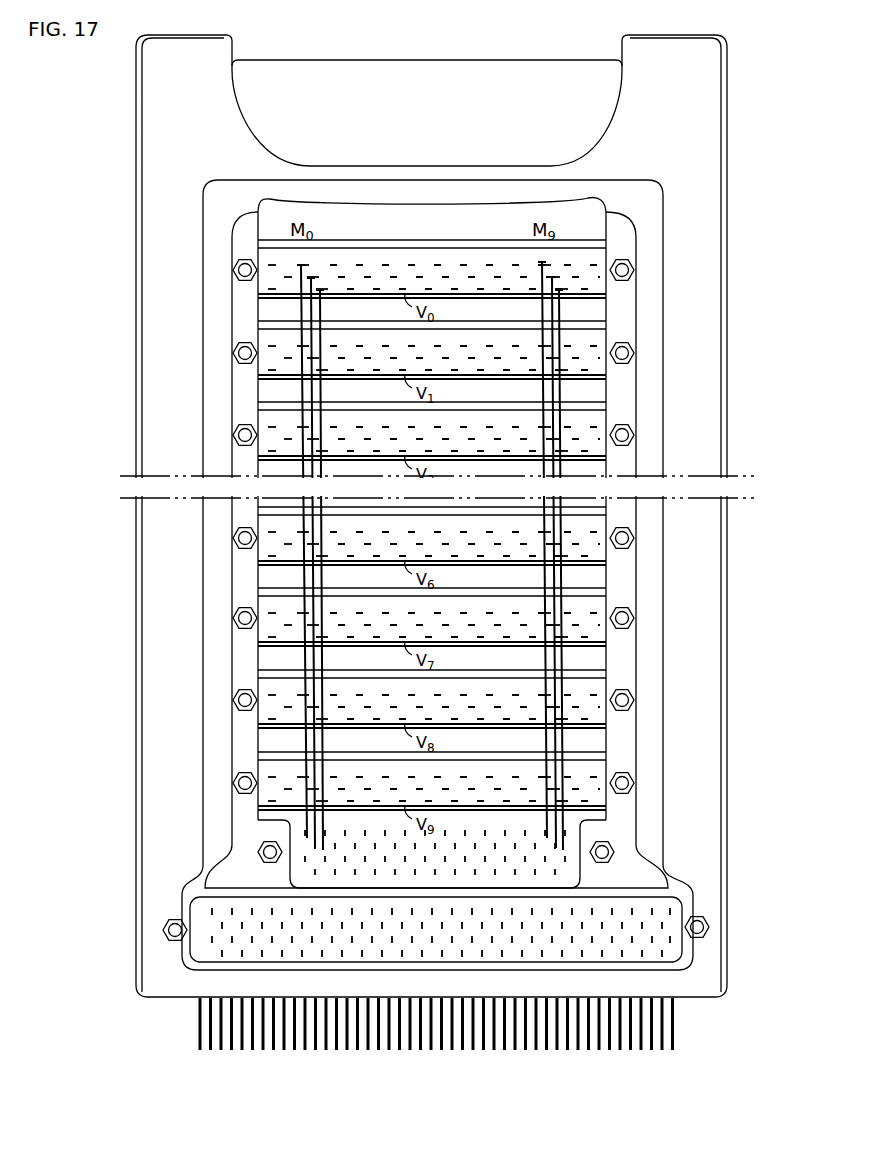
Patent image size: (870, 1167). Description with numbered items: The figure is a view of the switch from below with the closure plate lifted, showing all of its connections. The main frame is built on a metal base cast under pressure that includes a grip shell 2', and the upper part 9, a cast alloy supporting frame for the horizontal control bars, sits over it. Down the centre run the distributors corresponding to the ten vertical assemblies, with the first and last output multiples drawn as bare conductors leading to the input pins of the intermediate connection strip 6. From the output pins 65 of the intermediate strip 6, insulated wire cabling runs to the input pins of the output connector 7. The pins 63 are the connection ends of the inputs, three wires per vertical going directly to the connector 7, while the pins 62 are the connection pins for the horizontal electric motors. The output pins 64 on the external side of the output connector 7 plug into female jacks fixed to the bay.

The grip shell 2' is at (427, 37).
The upper part 9 is at (692, 48).
The input connection pins 63 is at (273, 287).
The connection pins for the horizontal electric motors 62 is at (576, 285).
The intermediate connection strip 6 is at (297, 843).
The output pins of the intermediate strip 65 is at (565, 857).
The output connector 7 is at (207, 903).
The output pins 64 is at (198, 1015).